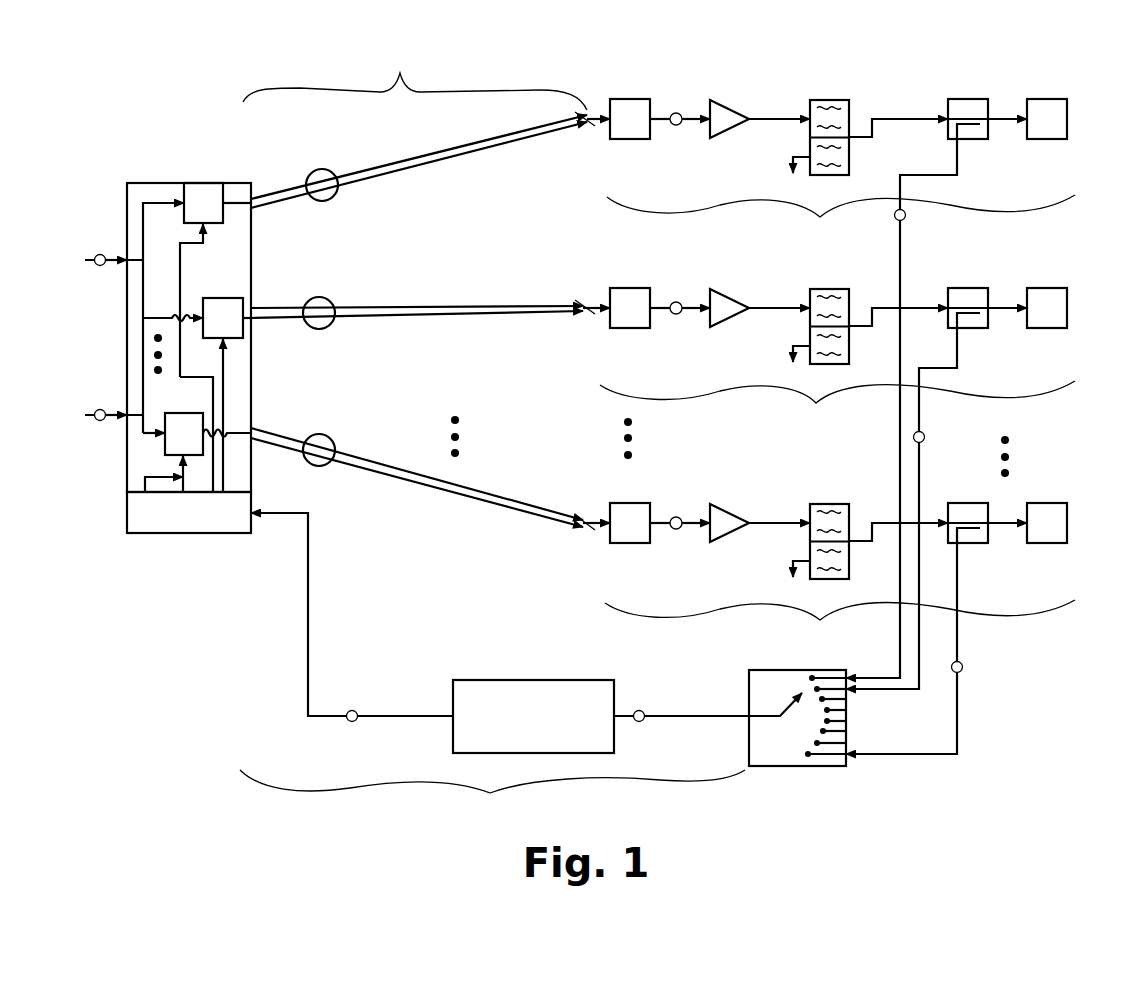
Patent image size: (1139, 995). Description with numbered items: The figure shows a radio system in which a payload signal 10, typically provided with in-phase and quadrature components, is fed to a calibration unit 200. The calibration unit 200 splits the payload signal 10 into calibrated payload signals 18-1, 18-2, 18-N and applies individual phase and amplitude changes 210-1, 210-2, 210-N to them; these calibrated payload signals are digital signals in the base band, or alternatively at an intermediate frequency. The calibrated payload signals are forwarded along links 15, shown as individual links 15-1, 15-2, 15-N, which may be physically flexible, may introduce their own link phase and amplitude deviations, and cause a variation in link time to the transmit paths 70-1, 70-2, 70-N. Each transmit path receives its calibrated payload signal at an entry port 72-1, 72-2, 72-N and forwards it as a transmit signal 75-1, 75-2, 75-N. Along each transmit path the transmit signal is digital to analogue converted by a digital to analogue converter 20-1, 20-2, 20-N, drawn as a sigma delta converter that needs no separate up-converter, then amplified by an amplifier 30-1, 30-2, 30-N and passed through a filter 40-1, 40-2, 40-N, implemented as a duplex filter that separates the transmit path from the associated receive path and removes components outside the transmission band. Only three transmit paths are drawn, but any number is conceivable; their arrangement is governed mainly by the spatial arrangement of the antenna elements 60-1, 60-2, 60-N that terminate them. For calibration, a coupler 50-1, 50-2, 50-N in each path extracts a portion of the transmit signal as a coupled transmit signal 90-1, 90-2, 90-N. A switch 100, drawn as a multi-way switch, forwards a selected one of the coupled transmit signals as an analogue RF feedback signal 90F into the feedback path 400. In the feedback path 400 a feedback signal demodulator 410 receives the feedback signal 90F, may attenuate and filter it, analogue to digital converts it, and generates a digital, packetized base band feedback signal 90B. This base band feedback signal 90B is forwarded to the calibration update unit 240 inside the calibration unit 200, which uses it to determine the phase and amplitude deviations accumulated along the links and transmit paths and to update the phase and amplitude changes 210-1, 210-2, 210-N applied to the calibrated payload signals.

The payload signal 10 is at (100, 267).
The links 15 is at (415, 79).
The link 15-1 is at (460, 160).
The link 15-2 is at (445, 323).
The link 15-N is at (460, 500).
The calibrated payload signal 18-1 is at (325, 200).
The calibrated payload signal 18-2 is at (318, 330).
The calibrated payload signal 18-N is at (320, 468).
The digital to analogue converter 20-1 is at (630, 99).
The digital to analogue converter 20-2 is at (630, 288).
The digital to analogue converter 20-N is at (630, 503).
The amplifier 30-1 is at (730, 100).
The amplifier 30-2 is at (726, 290).
The amplifier 30-N is at (722, 505).
The filter 40-1 is at (835, 100).
The filter 40-2 is at (838, 289).
The filter 40-N is at (830, 505).
The coupler 50-1 is at (965, 97).
The coupler 50-2 is at (975, 288).
The coupler 50-N is at (975, 503).
The antenna element 60-1 is at (1050, 97).
The antenna element 60-2 is at (1060, 288).
The antenna element 60-N is at (1050, 503).
The transmit path 70-1 is at (841, 219).
The transmit path 70-2 is at (837, 405).
The transmit path 70-N is at (840, 622).
The entry port 72-1 is at (585, 125).
The entry port 72-2 is at (583, 300).
The entry port 72-N is at (580, 515).
The transmit signal 75-1 is at (676, 125).
The transmit signal 75-2 is at (676, 314).
The transmit signal 75-N is at (676, 531).
The coupled transmit signal 90-1 is at (906, 215).
The coupled transmit signal 90-2 is at (925, 437).
The coupled transmit signal 90-N is at (962, 667).
The base band feedback signal 90B is at (360, 712).
The feedback signal 90F is at (641, 713).
The switch 100 is at (757, 670).
The calibration unit 200 is at (133, 197).
The phase and amplitude change 210-1 is at (202, 183).
The phase and amplitude change 210-2 is at (227, 298).
The phase and amplitude change 210-N is at (188, 413).
The calibration update unit 240 is at (189, 512).
The feedback path 400 is at (492, 795).
The feedback signal demodulator 410 is at (533, 716).